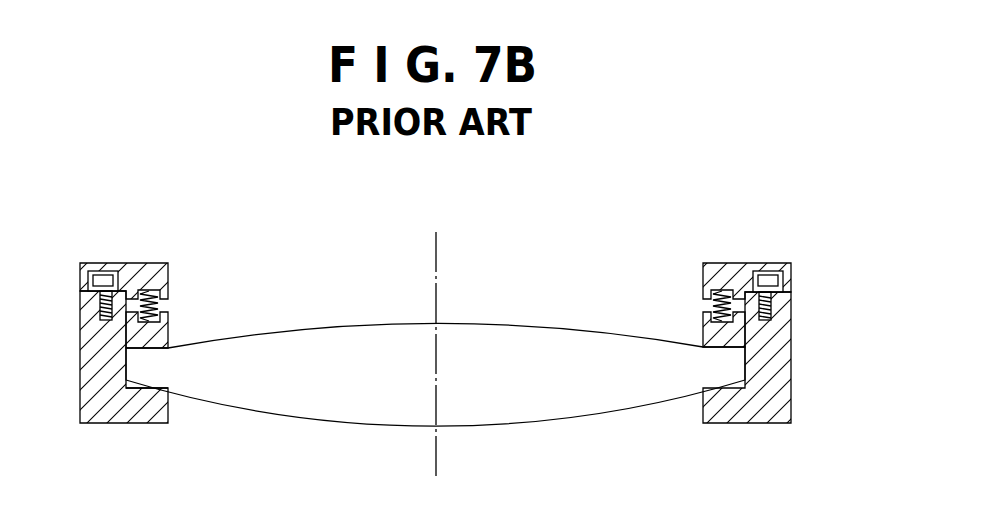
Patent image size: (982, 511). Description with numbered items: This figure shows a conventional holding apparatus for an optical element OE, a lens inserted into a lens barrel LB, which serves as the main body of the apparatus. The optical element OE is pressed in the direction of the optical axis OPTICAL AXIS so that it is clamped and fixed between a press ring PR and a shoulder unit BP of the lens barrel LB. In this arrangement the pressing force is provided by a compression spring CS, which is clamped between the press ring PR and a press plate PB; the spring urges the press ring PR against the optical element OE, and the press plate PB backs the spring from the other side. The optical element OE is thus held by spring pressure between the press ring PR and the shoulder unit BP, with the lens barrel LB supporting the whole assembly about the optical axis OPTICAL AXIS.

The lens barrel LB is at (104, 424).
The press plate PB is at (147, 262).
The press ring PR is at (160, 333).
The compression spring CS is at (160, 306).
The optical element OE is at (557, 343).
The shoulder unit BP is at (172, 383).
The optical axis OPTICAL AXIS is at (437, 467).